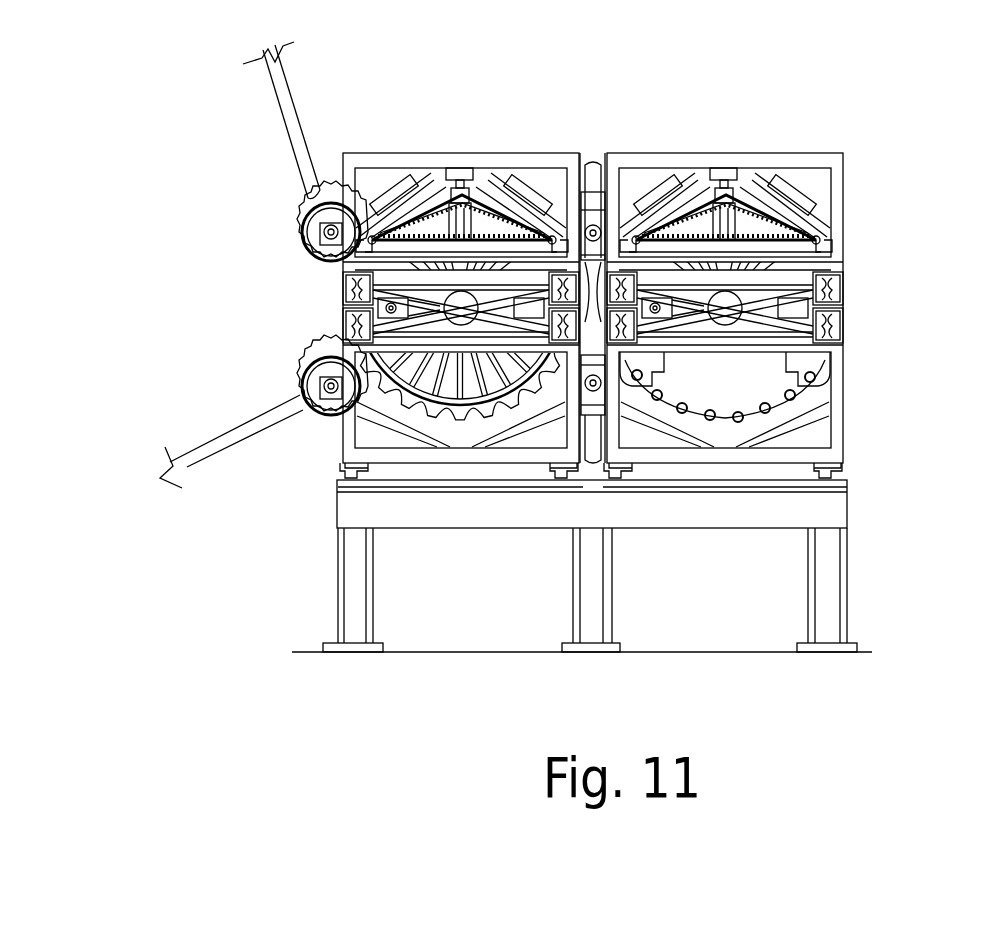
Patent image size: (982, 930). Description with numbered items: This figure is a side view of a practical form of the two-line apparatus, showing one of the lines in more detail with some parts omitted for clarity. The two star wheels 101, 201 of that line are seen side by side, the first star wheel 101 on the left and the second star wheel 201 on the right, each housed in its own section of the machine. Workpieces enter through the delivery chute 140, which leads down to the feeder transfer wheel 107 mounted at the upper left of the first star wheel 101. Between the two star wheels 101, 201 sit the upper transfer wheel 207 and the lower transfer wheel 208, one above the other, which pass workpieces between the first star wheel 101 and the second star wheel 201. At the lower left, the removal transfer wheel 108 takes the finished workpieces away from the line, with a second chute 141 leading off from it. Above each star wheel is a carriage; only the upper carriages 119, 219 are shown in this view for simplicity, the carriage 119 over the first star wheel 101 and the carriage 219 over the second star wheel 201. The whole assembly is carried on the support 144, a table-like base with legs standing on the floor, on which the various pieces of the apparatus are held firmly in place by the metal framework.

The first star wheel 101 is at (452, 380).
The feeder transfer wheel 107 is at (293, 227).
The removal transfer wheel 108 is at (299, 366).
The upper carriage 119 is at (493, 162).
The delivery chute 140 is at (278, 103).
The lower drive shaft 141 is at (197, 453).
The support 144 is at (818, 511).
The second star wheel 201 is at (778, 365).
The upper transfer wheel 207 is at (596, 160).
The lower transfer wheel 208 is at (596, 420).
The upper carriage 219 is at (750, 160).